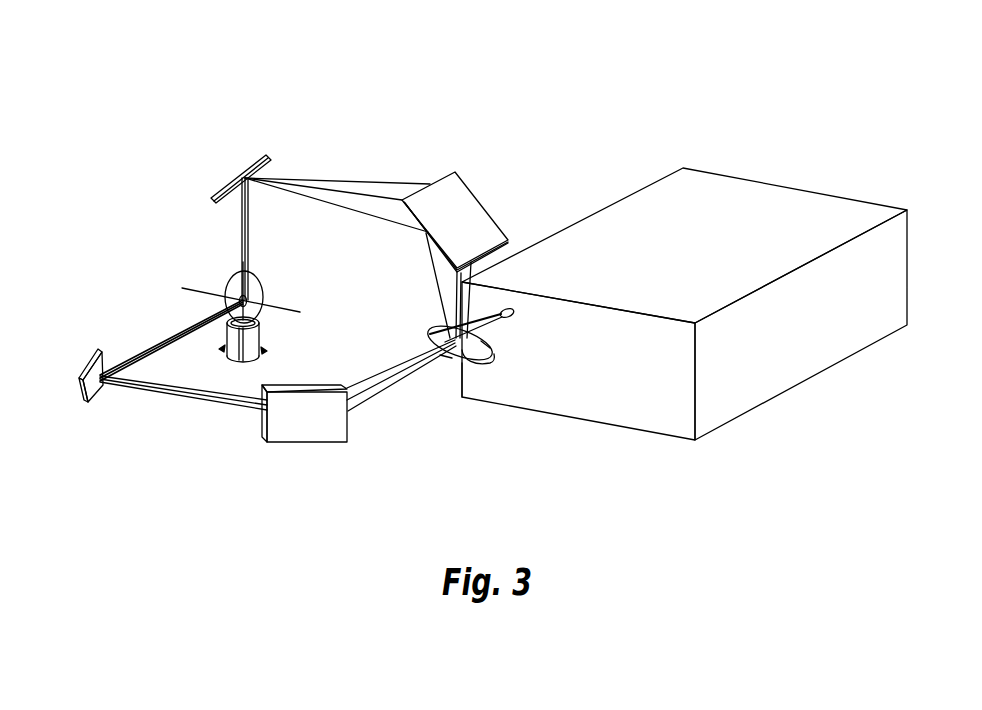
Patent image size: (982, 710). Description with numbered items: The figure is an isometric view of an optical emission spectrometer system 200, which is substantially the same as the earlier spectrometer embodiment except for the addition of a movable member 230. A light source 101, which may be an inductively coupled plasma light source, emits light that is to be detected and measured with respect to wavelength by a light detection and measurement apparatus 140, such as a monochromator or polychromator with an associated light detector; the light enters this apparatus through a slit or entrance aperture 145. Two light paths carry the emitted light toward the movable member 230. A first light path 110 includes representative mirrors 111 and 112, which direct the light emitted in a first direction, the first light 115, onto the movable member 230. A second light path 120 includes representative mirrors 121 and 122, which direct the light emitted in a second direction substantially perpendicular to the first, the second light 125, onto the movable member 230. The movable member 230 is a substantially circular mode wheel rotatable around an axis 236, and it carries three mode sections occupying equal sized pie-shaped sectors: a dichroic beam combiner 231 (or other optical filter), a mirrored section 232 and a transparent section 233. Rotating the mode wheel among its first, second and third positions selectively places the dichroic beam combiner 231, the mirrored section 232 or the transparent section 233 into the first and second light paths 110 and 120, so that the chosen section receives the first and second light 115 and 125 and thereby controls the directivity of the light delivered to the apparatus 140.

The optical emission spectrometer system 200 is at (476, 50).
The first light path 110 is at (335, 160).
The mirror 111 is at (228, 177).
The mirror 112 is at (470, 203).
The first light 115 is at (433, 270).
The light source 101 is at (230, 290).
The mirror 121 is at (90, 373).
The second light path 120 is at (164, 438).
The mirror 122 is at (307, 405).
The second light 125 is at (180, 337).
The dichroic beam combiner 231 is at (432, 330).
The mirrored section 232 is at (446, 353).
The transparent section 233 is at (480, 363).
The axis 236 is at (483, 345).
The movable member 230 is at (482, 367).
The entrance aperture 145 is at (500, 310).
The light detection and measurement apparatus 140 is at (701, 260).